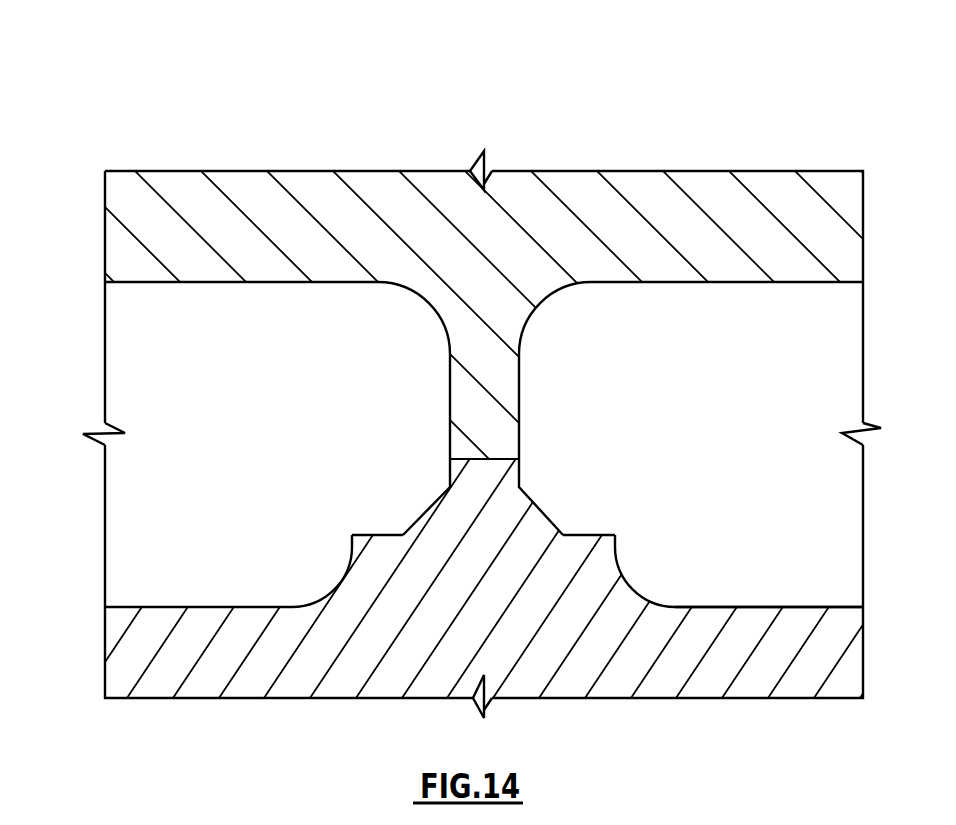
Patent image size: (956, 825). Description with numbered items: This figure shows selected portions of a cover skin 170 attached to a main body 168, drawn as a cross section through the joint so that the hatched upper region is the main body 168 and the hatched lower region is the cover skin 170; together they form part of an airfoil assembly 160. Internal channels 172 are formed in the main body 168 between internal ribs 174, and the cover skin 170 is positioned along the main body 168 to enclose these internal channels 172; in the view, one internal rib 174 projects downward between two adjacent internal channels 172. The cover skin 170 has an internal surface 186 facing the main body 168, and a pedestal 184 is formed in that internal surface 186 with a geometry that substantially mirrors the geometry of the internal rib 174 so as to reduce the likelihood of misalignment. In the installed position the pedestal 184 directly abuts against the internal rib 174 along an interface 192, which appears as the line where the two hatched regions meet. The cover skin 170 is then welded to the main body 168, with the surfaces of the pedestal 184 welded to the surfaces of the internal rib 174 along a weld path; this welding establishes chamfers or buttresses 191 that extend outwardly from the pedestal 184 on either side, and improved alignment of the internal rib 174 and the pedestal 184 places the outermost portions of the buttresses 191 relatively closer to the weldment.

The assembly 160 is at (101, 66).
The main body 168 is at (313, 180).
The cover skin 170 is at (199, 685).
The internal channel 172 is at (125, 605).
The internal rib 174 is at (520, 393).
The pedestal 184 is at (488, 477).
The internal surface 186 is at (800, 607).
The buttress 191 is at (366, 535).
The interface 192 is at (502, 459).